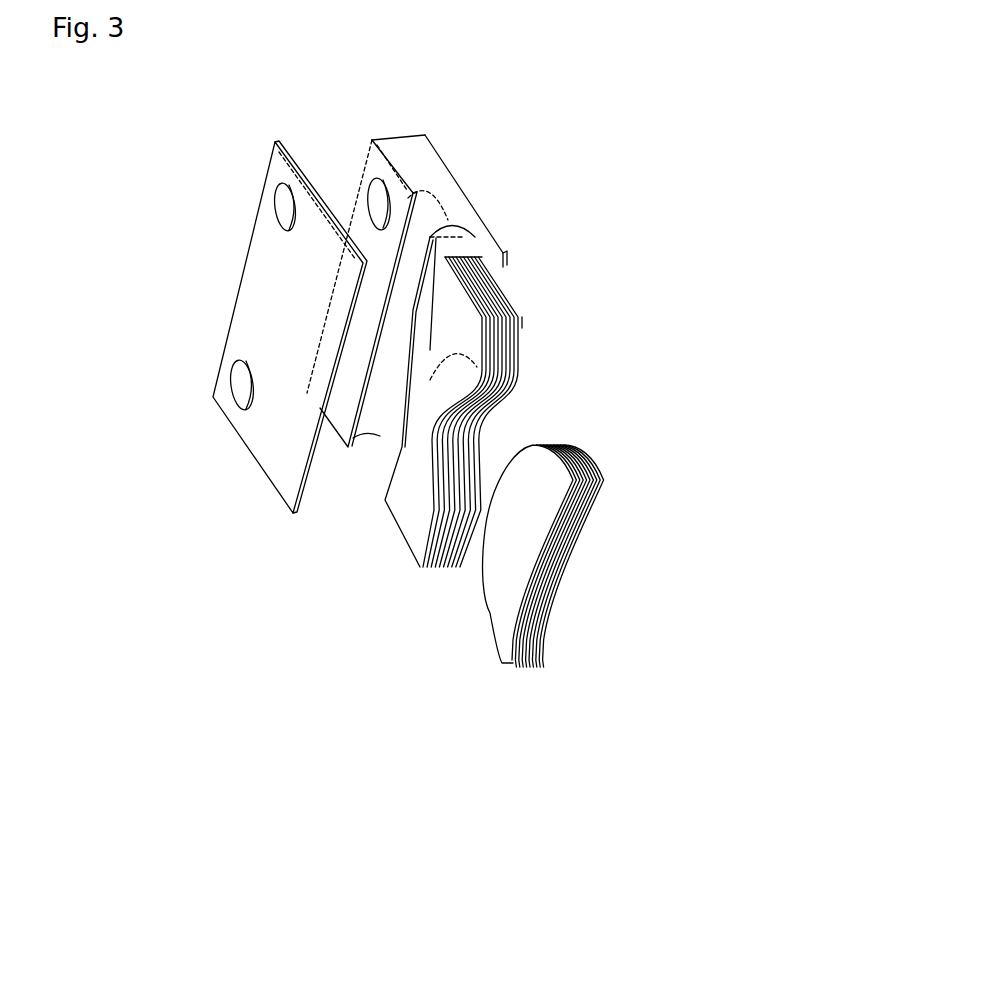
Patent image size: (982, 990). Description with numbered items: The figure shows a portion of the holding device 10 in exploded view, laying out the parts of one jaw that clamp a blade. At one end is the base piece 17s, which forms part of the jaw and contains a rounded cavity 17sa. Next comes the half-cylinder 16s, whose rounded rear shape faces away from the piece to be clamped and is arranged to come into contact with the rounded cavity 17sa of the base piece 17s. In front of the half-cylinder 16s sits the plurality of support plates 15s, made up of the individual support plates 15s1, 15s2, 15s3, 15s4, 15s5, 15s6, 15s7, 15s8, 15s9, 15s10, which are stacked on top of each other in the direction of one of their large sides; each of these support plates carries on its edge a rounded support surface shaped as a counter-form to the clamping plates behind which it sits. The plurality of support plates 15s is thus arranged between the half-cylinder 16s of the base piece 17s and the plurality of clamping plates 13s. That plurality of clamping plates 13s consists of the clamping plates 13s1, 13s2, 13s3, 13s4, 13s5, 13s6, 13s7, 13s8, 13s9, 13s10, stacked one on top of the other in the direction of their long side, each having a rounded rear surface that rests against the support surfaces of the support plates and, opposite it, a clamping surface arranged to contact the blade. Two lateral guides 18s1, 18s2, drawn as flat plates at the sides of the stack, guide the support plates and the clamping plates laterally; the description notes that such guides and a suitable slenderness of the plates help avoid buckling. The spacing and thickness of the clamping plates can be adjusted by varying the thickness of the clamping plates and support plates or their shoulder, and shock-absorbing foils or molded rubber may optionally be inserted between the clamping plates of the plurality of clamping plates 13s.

The holding device 10 is at (162, 191).
The plurality of clamping plates 13s is at (610, 585).
The clamping plate 13s1 is at (502, 663).
The clamping plate 13s2 is at (512, 663).
The clamping plate 13s3 is at (515, 660).
The clamping plate 13s4 is at (520, 632).
The clamping plate 13s5 is at (523, 620).
The clamping plate 13s6 is at (532, 598).
The clamping plate 13s7 is at (547, 575).
The clamping plate 13s8 is at (557, 550).
The clamping plate 13s9 is at (580, 525).
The clamping plate 13s10 is at (595, 500).
The plurality of support plates 15s is at (460, 593).
The support plate 15s1 is at (415, 402).
The support plate 15s2 is at (433, 415).
The support plate 15s3 is at (447, 430).
The support plate 15s4 is at (453, 443).
The support plate 15s5 is at (432, 567).
The support plate 15s6 is at (437, 567).
The support plate 15s7 is at (442, 567).
The support plate 15s8 is at (447, 567).
The support plate 15s9 is at (452, 567).
The support plate 15s10 is at (458, 567).
The half-cylinder 16s is at (463, 232).
The base piece 17s is at (415, 158).
The rounded cavity 17sa is at (417, 203).
The lateral guide 18s1 is at (262, 370).
The lateral guide 18s2 is at (468, 198).